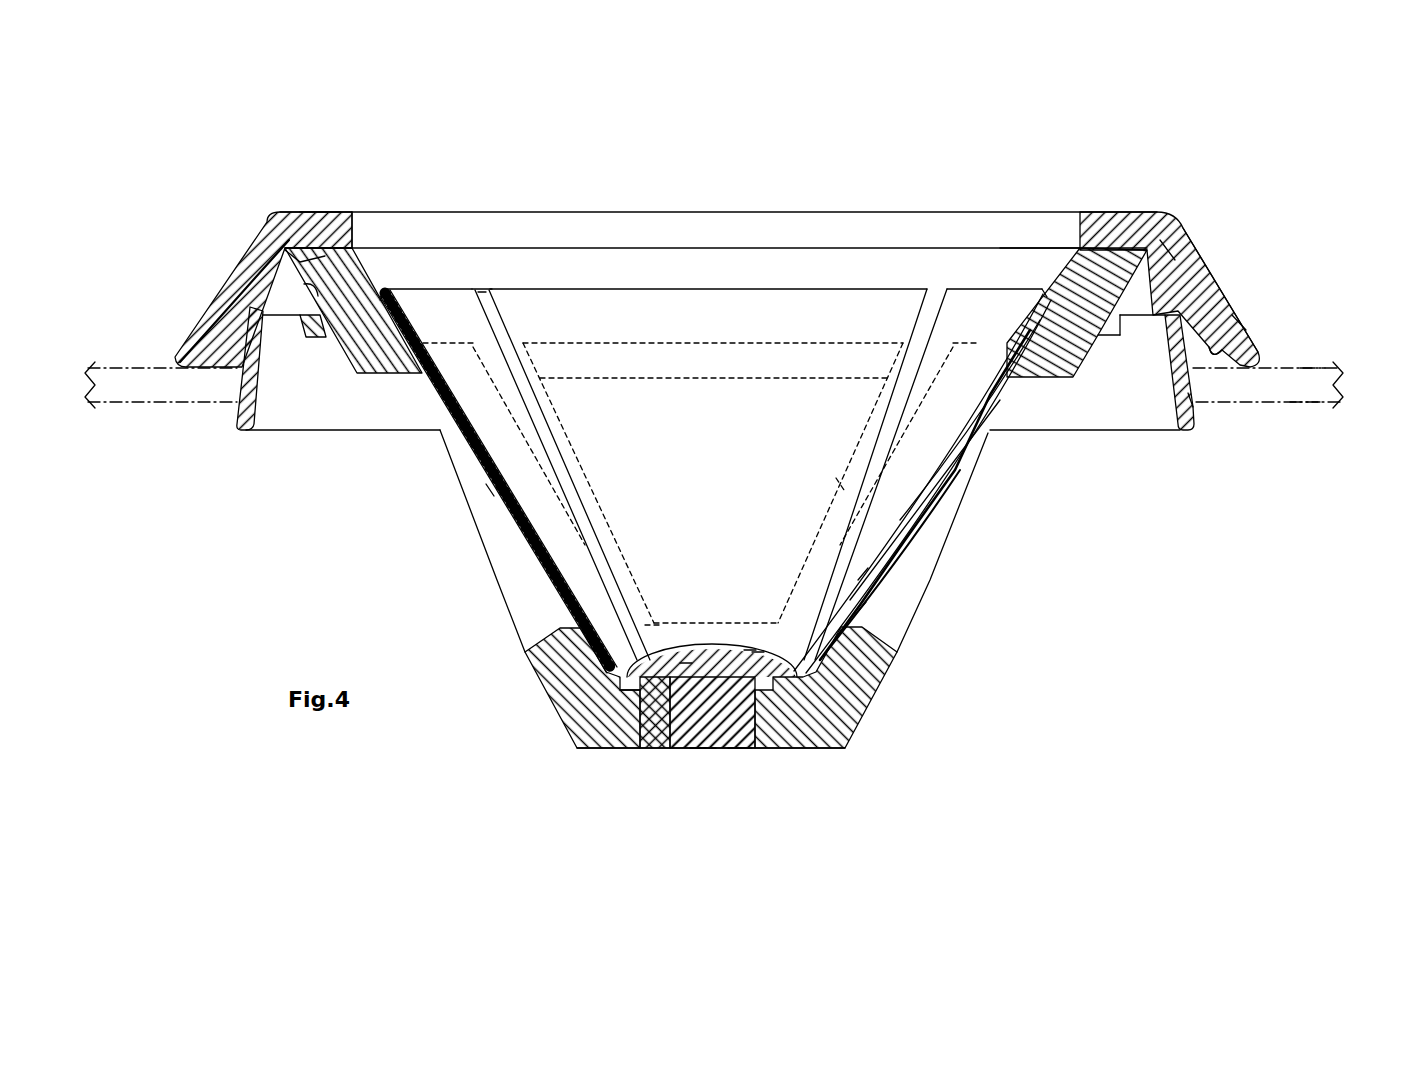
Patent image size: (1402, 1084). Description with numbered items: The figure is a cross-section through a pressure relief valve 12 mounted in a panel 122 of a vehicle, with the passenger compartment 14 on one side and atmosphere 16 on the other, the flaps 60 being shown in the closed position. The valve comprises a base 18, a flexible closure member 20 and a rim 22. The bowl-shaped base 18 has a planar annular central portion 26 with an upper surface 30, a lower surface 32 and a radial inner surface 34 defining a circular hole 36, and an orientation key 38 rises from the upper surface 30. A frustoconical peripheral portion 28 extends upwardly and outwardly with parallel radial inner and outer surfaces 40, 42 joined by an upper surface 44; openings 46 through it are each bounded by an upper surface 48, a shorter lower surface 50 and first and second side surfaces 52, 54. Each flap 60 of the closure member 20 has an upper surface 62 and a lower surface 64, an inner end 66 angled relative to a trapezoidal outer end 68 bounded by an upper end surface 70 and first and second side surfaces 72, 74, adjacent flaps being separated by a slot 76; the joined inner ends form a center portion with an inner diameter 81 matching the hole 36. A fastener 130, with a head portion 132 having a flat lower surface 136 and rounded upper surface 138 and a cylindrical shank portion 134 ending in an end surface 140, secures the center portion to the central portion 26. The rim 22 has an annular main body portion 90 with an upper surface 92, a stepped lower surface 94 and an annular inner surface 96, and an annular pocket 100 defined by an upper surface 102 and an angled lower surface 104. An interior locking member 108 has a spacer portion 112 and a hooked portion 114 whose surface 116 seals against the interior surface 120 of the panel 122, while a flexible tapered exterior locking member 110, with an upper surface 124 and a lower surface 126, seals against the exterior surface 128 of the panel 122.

The pressure relief valve 12 is at (222, 160).
The passenger compartment 14 is at (113, 514).
The atmosphere 16 is at (93, 255).
The base 18 is at (570, 712).
The flexible closure member 20 is at (490, 490).
The rim 22 is at (260, 231).
The central portion 26 is at (648, 752).
The peripheral portion 28 is at (360, 350).
The upper surface 30 is at (862, 610).
The lower surface 32 is at (793, 752).
The radial inner surface 34 is at (745, 752).
The circular hole 36 is at (698, 752).
The orientation key 38 is at (650, 623).
The radial inner surface 40 is at (1043, 262).
The radial outer surface 42 is at (1083, 360).
The upper surface 44 is at (1120, 238).
The openings 46 is at (487, 581).
The upper surface 48 is at (637, 347).
The lower surface 50 is at (713, 623).
The first side surface 52 is at (593, 487).
The second side surface 54 is at (840, 483).
The flaps 60 is at (432, 318).
The upper surface 62 is at (492, 468).
The lower surface 64 is at (500, 493).
The inner end 66 is at (615, 695).
The outer end 68 is at (468, 438).
The upper end surface 70 is at (695, 289).
The first side surface 72 is at (497, 316).
The second side surface 74 is at (905, 322).
The slot 76 is at (481, 282).
The inner diameter 81 is at (750, 645).
The main body portion 90 is at (1168, 257).
The upper surface 92 is at (320, 230).
The stepped lower surface 94 is at (313, 300).
The annular inner surface 96 is at (357, 226).
The annular pocket 100 is at (303, 258).
The upper surface 102 is at (345, 242).
The lower surface 104 is at (305, 296).
The interior locking member 108 is at (233, 410).
The exterior locking member 110 is at (228, 284).
The spacer portion 112 is at (1240, 322).
The hooked portion 114 is at (1193, 422).
The surface 116 is at (1196, 400).
The interior surface 120 is at (1300, 402).
The panel 122 is at (1288, 376).
The upper surface 124 is at (1200, 298).
The lower surface 126 is at (1244, 325).
The exterior surface 128 is at (1312, 368).
The fastener 130 is at (685, 660).
The head portion 132 is at (758, 648).
The shank portion 134 is at (735, 752).
The flat lower surface 136 is at (625, 747).
The rounded upper surface 138 is at (865, 575).
The end surface 140 is at (710, 752).